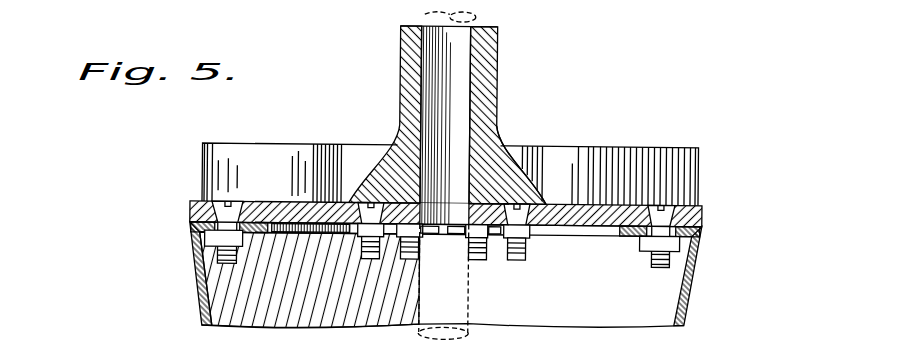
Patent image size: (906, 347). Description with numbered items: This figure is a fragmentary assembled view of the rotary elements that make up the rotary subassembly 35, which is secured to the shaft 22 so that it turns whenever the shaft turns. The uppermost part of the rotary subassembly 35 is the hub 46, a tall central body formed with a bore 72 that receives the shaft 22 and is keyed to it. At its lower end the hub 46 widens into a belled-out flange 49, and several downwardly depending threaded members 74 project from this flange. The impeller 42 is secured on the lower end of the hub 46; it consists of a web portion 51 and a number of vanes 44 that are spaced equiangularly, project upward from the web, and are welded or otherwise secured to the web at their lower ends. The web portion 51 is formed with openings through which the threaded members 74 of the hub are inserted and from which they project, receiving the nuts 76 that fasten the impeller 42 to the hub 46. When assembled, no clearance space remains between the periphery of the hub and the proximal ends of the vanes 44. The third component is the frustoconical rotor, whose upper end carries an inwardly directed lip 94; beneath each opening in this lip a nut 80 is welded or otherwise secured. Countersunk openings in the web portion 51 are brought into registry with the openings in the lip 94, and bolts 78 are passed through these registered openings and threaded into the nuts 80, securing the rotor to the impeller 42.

The shaft 22 is at (474, 14).
The rotary subassembly 35 is at (160, 201).
The impeller 42 is at (708, 160).
The vanes 44 is at (377, 150).
The hub 46 is at (497, 85).
The belled-out flange 49 is at (525, 185).
The web portion 51 is at (622, 153).
The bore 72 is at (423, 58).
The threaded members 74 is at (412, 255).
The nuts 76 is at (467, 229).
The bolts 78 is at (210, 263).
The nut 80 is at (213, 244).
The inwardly directed flange or lip 94 is at (262, 233).